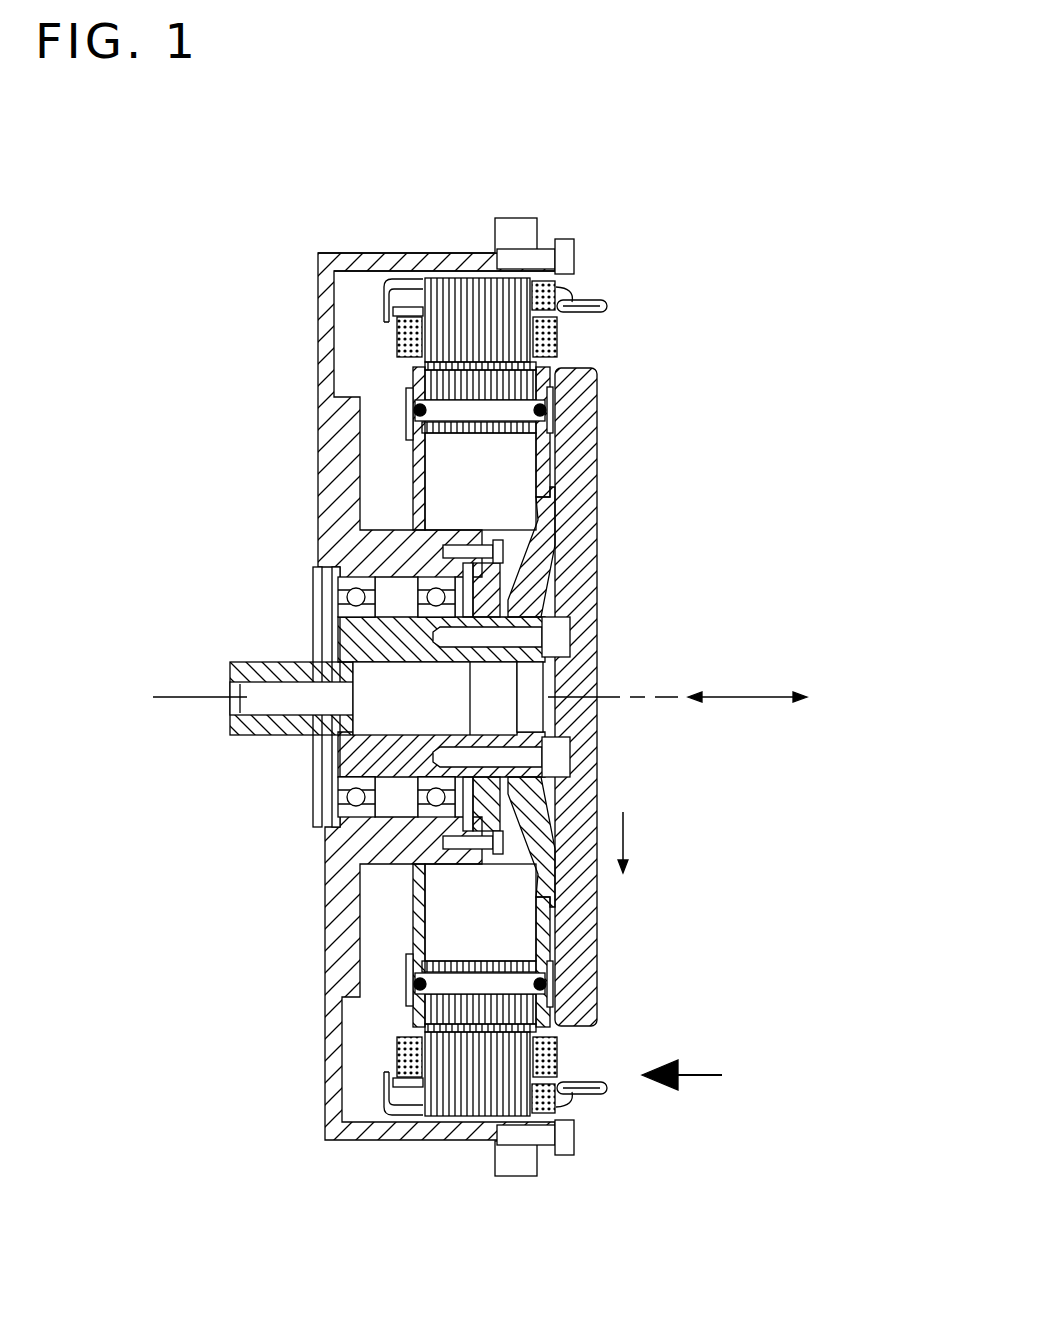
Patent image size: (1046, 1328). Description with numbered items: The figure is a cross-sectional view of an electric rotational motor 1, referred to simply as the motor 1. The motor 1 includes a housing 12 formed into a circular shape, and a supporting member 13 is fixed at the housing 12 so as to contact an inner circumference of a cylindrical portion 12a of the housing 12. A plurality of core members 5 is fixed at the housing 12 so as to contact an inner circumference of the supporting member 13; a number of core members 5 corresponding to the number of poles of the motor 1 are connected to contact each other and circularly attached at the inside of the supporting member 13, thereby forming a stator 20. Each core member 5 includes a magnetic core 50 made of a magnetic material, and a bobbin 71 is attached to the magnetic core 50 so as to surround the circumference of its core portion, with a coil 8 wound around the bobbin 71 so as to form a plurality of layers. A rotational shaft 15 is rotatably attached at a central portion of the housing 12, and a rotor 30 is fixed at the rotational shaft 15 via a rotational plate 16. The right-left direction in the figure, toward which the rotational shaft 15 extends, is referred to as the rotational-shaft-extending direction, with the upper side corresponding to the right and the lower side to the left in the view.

The electric rotational motor 1 is at (655, 597).
The core member 5 is at (608, 1055).
The coil 8 is at (410, 1060).
The housing 12 is at (366, 237).
The cylindrical portion 12a is at (418, 252).
The supporting member 13 is at (395, 1092).
The rotational shaft 15 is at (257, 727).
The rotational plate 16 is at (583, 428).
The stator 20 is at (639, 1106).
The rotor 30 is at (508, 949).
The magnetic core 50 is at (473, 1112).
The bobbin 71 is at (413, 1083).